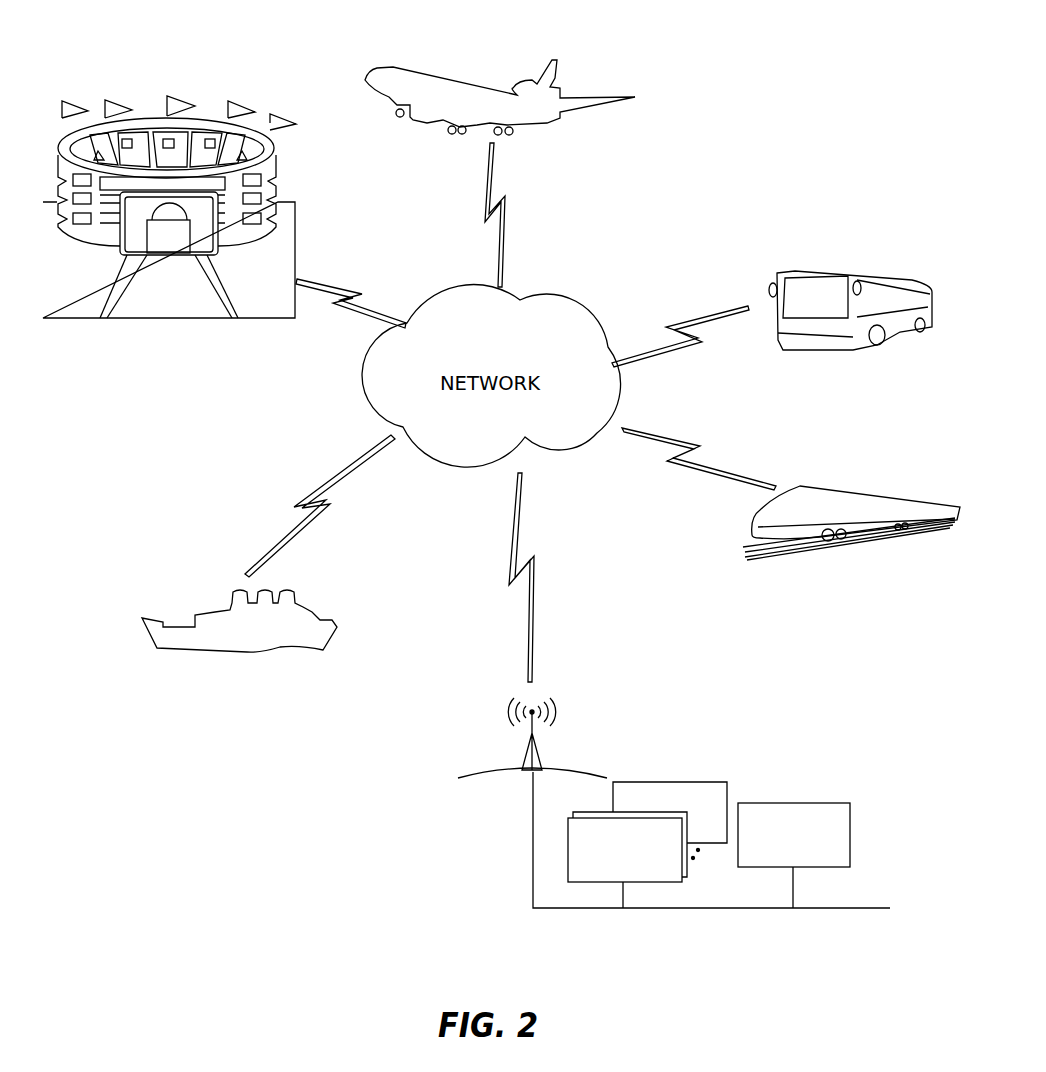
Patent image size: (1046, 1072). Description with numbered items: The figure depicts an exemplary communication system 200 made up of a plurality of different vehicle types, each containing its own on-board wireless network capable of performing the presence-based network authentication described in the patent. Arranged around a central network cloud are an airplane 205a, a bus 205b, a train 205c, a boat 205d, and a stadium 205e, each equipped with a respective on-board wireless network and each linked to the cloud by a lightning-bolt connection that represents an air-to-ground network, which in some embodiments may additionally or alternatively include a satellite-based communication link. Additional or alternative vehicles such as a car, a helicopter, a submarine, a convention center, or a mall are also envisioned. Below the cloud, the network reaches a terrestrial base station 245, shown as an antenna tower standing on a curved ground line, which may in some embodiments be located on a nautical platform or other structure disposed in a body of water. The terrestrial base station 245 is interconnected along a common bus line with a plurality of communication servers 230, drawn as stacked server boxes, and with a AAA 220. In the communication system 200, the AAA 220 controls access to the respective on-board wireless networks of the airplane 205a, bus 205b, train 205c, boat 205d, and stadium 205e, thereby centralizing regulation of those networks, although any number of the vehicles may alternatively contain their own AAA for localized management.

The communication system 200 is at (822, 78).
The airplane 205a is at (553, 62).
The bus 205b is at (877, 273).
The train 205c is at (853, 488).
The boat 205d is at (305, 608).
The stadium 205e is at (245, 103).
The terrestrial base station 245 is at (540, 752).
The plurality of communication servers 230 is at (695, 780).
The AAA 220 is at (783, 802).